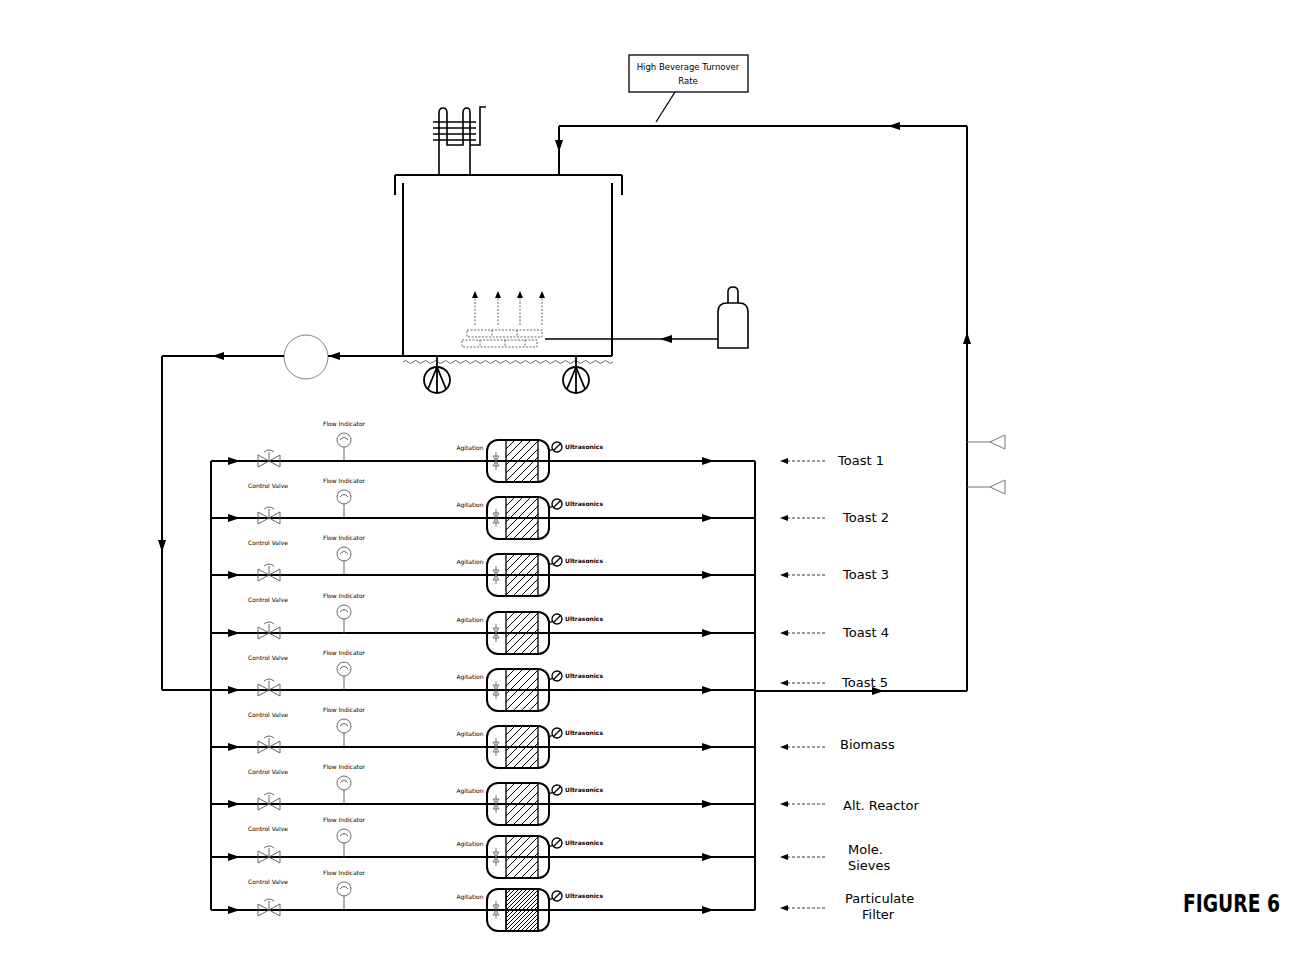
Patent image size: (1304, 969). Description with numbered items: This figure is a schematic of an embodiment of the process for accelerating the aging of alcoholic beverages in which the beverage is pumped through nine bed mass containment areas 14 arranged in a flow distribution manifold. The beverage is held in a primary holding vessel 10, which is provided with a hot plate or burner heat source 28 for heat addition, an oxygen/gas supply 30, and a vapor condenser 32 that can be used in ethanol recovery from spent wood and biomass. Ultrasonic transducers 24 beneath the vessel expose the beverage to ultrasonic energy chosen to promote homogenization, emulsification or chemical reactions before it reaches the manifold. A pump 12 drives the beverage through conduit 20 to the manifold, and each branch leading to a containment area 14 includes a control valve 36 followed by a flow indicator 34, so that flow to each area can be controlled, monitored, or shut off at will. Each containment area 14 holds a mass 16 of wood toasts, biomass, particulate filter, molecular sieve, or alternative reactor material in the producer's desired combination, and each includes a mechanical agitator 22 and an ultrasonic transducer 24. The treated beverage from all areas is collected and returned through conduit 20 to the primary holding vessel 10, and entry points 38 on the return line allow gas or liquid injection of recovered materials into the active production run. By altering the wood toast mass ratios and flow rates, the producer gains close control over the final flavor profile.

The primary holding vessel 10 is at (403, 235).
The pump 12 is at (303, 335).
The bed mass containment areas 14 is at (548, 917).
The biomass bed 16 is at (518, 931).
The conduit 20 is at (183, 356).
The mechanical agitator 22 is at (495, 912).
The ultrasonic chambers/transducers 24 is at (425, 375).
The hot plate/burner (heat source) 28 is at (499, 364).
The oxygen/gas supply 30 is at (748, 312).
The vapor condenser 32 is at (437, 121).
The flow indicator/sensor 34 is at (344, 892).
The control valves 36 is at (268, 913).
The entry points 38 is at (1000, 442).